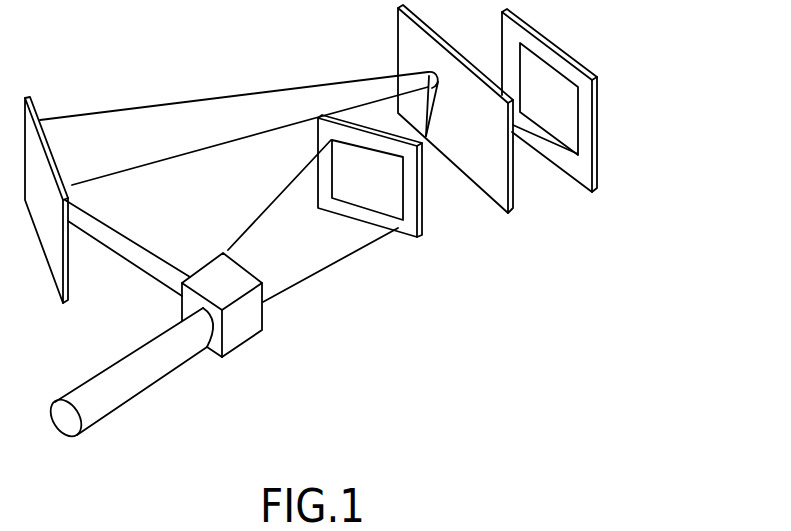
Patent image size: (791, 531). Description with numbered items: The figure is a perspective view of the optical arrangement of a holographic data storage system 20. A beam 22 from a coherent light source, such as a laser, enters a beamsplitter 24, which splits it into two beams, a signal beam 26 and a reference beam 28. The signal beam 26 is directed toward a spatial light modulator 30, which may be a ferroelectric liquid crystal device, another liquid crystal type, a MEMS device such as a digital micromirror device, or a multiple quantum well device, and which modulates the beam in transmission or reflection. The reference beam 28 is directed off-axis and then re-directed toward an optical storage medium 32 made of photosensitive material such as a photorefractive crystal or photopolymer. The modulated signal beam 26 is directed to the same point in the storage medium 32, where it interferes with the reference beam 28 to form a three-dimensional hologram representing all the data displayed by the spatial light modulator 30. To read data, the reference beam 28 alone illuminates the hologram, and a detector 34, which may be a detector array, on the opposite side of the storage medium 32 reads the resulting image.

The holographic data storage system 20 is at (512, 294).
The beam 22 is at (138, 378).
The beamsplitter 24 is at (242, 328).
The signal beam 26 is at (317, 254).
The reference beam 28 is at (168, 123).
The spatial light modulator 30 is at (410, 232).
The optical storage medium 32 is at (482, 173).
The detector 34 is at (598, 163).